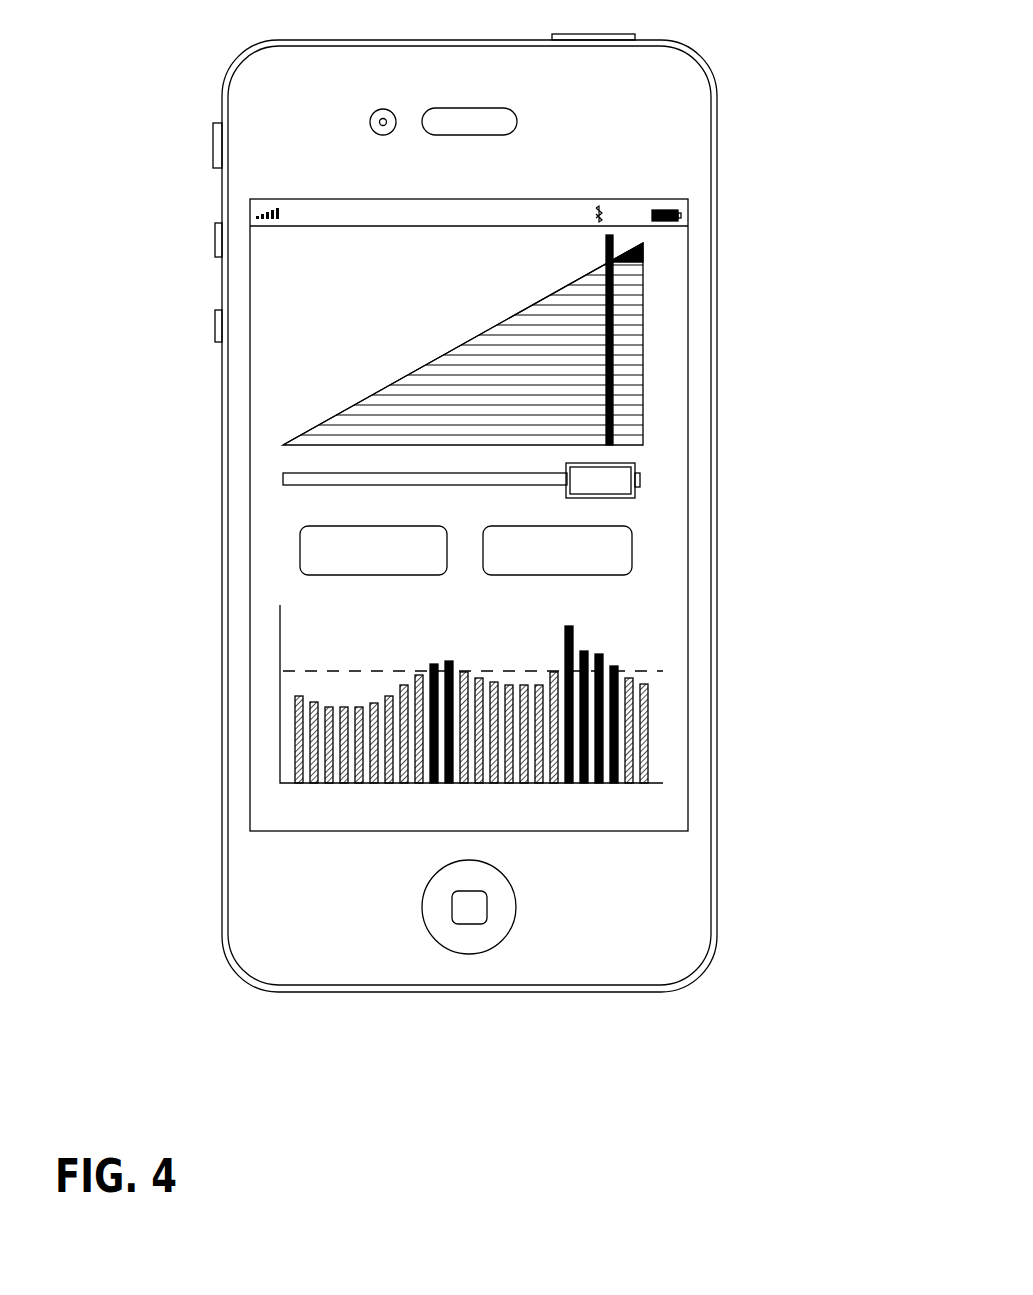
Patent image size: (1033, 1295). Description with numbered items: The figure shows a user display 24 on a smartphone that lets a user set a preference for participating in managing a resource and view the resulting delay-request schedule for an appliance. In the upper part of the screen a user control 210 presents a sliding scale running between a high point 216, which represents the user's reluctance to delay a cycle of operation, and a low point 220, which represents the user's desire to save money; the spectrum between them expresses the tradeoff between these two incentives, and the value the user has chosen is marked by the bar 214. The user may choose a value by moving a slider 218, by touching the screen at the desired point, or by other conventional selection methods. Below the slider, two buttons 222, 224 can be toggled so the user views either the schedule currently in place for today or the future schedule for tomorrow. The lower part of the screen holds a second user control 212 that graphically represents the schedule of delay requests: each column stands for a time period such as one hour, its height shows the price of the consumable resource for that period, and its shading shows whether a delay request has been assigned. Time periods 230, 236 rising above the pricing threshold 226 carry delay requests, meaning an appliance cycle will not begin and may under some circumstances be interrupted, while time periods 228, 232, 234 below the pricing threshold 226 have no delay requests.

The user display 24 is at (124, 36).
The user control 210 is at (640, 343).
The second user control 212 is at (492, 832).
The bar 214 is at (610, 240).
The high point 216 is at (643, 252).
The slider 218 is at (630, 484).
The low point 220 is at (306, 436).
The button 222 is at (306, 548).
The button 224 is at (629, 551).
The pricing threshold 226 is at (652, 674).
The time period 228 is at (637, 783).
The time period 230 is at (590, 783).
The time period 232 is at (510, 783).
The time period 234 is at (365, 783).
The time period 236 is at (440, 783).